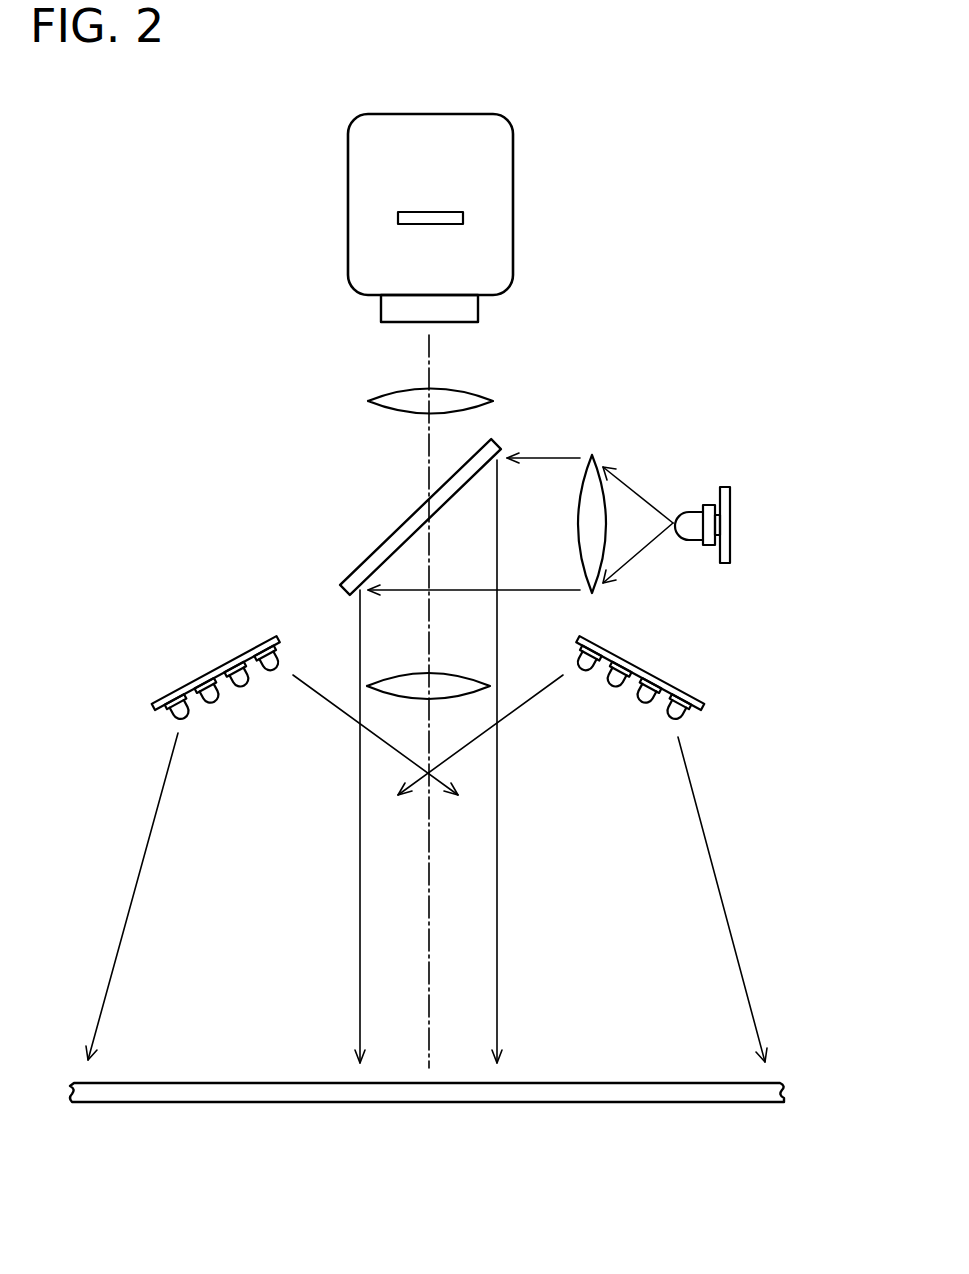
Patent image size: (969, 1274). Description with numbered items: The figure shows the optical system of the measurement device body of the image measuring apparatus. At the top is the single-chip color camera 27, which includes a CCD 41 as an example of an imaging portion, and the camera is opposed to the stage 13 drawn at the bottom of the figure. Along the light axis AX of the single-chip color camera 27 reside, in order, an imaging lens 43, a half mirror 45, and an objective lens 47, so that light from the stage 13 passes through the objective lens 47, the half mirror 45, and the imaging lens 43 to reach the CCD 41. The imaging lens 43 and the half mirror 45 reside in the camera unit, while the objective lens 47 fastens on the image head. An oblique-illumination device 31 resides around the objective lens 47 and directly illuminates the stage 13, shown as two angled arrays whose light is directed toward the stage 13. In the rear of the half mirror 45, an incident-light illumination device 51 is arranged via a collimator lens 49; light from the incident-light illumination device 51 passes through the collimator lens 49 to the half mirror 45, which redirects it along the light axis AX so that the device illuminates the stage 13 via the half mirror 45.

The stage 13 is at (762, 1083).
The single-chip color camera 27 is at (348, 180).
The oblique-illumination device 31 is at (213, 676).
The CCD 41 is at (443, 212).
The imaging lens 43 is at (368, 401).
The half mirror 45 is at (502, 447).
The objective lens 47 is at (455, 672).
The collimator lens 49 is at (593, 455).
The incident-light illumination device 51 is at (732, 510).
The light axis AX is at (430, 935).